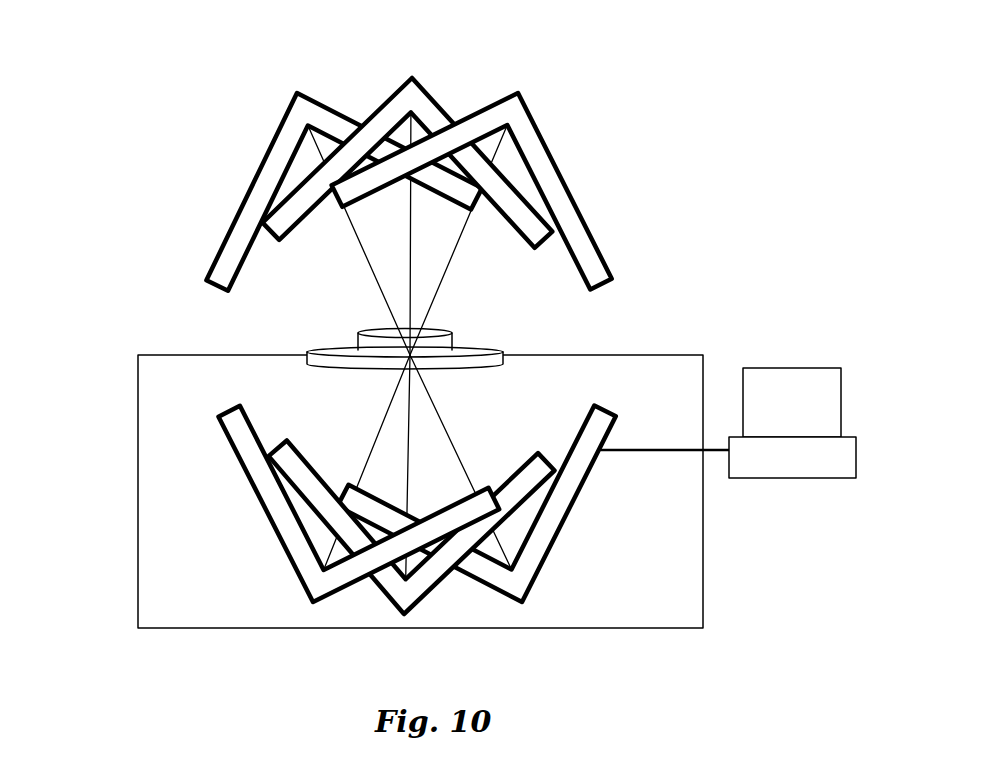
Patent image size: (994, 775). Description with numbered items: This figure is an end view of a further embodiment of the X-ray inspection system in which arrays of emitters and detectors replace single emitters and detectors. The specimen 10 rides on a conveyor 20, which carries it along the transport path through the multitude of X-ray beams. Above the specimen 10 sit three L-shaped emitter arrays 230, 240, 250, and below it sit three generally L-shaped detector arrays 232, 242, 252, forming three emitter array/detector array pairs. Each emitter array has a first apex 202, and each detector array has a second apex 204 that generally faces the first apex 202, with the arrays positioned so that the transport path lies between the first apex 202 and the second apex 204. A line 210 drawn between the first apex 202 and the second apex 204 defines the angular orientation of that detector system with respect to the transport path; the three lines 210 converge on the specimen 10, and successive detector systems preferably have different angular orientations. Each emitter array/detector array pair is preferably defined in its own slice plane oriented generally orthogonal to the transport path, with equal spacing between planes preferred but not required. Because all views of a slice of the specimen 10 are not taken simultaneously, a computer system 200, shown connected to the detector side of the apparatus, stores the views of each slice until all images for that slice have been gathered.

The specimen 10 is at (480, 352).
The conveyor 20 is at (650, 352).
The computer system 200 is at (793, 367).
The first apex 202 is at (401, 182).
The second apex 204 is at (404, 567).
The line 210 is at (408, 268).
The L-shaped emitter array 230 is at (580, 200).
The detector array 232 is at (248, 477).
The L-shaped emitter array 240 is at (430, 93).
The detector array 242 is at (367, 580).
The L-shaped emitter array 250 is at (233, 218).
The detector array 252 is at (580, 472).